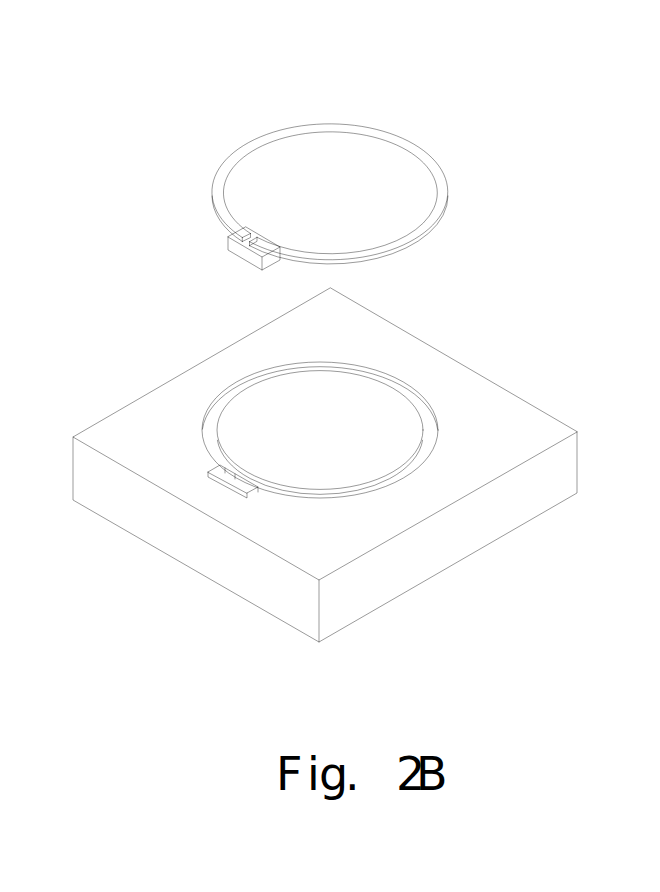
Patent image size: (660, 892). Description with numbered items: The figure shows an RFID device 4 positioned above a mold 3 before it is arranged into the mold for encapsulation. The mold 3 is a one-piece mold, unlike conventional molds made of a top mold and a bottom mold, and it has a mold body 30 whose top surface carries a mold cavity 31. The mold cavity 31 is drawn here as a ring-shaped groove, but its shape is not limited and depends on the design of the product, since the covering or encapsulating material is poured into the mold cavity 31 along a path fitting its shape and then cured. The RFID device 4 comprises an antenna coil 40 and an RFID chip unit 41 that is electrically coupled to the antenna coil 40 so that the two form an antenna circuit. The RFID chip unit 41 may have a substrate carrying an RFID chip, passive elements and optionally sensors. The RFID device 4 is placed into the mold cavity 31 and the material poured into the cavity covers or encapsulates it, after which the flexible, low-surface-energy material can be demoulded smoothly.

The mold 3 is at (140, 382).
The mold body 30 is at (495, 381).
The mold cavity 31 is at (350, 370).
The RFID device 4 is at (218, 147).
The antenna coil 40 is at (377, 132).
The RFID chip unit 41 is at (248, 258).